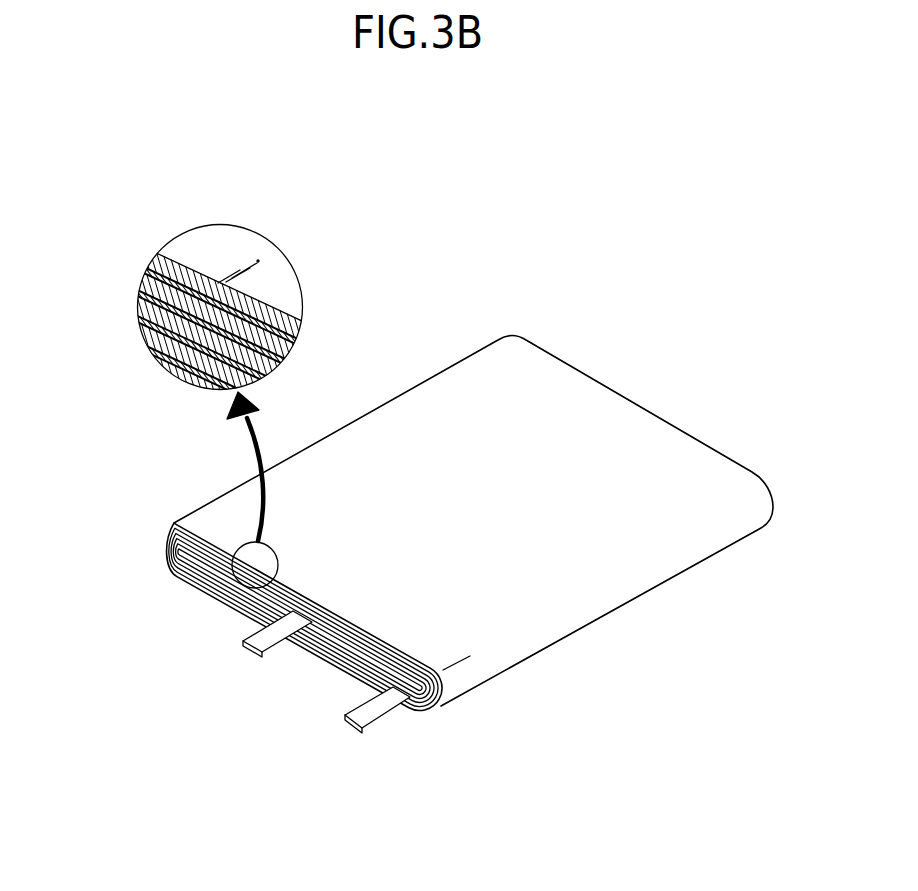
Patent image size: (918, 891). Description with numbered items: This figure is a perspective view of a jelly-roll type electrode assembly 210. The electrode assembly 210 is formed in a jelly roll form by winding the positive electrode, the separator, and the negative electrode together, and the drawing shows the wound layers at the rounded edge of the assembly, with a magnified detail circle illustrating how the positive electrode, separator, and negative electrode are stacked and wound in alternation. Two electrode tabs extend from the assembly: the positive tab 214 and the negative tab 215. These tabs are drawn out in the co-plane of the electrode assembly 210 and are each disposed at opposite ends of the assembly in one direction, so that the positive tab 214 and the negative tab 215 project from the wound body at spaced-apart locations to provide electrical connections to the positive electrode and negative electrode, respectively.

The electrode assembly 210 is at (426, 219).
The positive tab 214 is at (356, 717).
The negative tab 215 is at (243, 643).